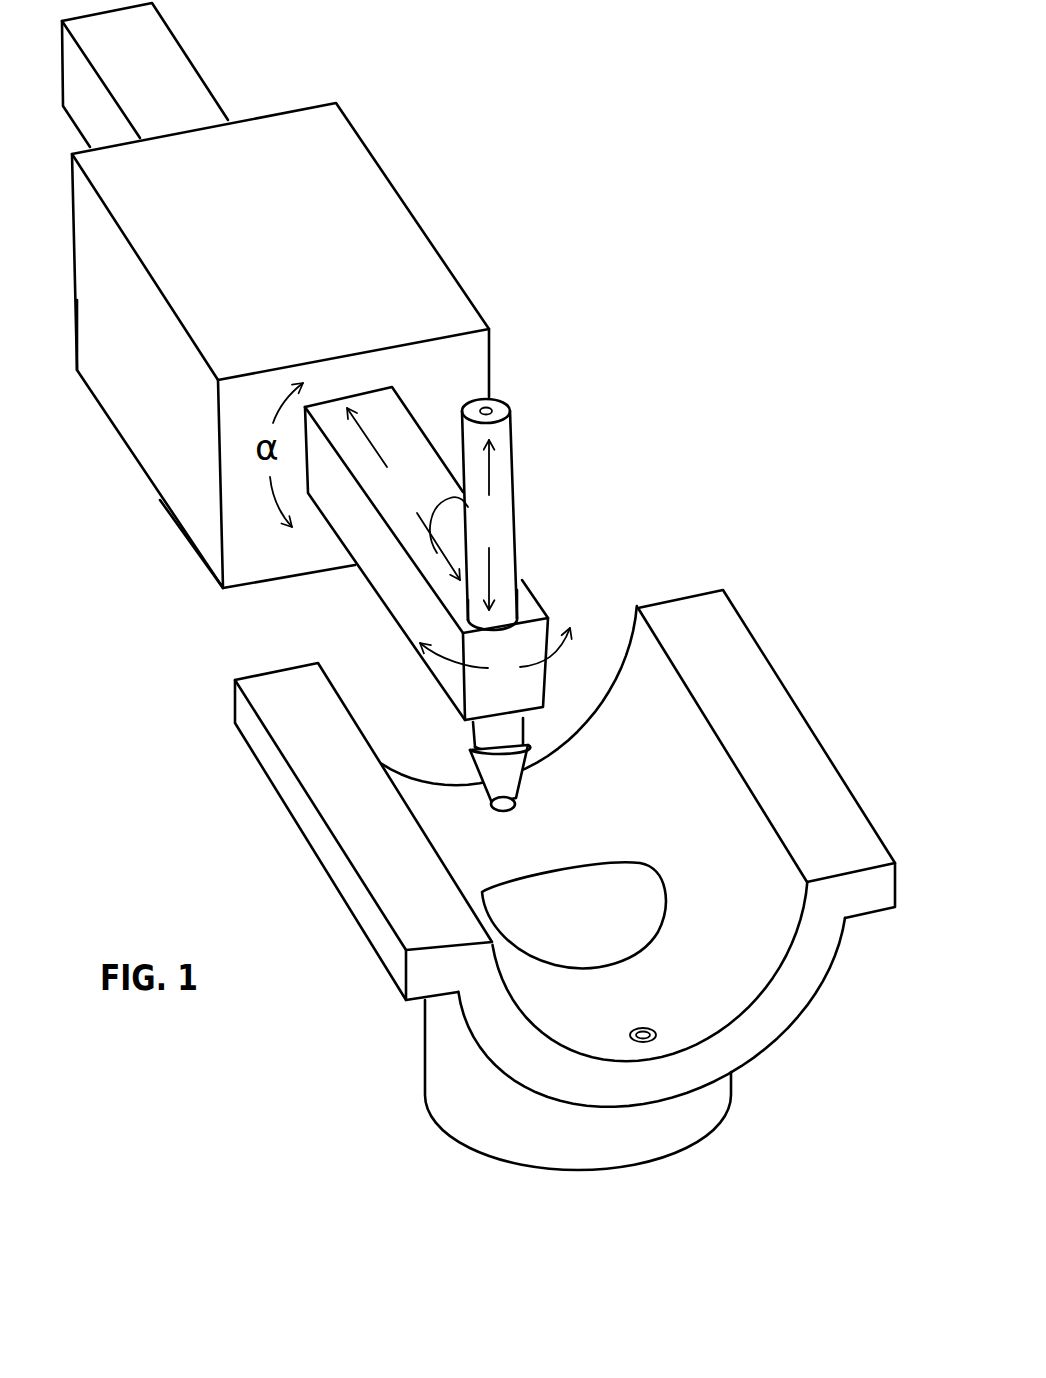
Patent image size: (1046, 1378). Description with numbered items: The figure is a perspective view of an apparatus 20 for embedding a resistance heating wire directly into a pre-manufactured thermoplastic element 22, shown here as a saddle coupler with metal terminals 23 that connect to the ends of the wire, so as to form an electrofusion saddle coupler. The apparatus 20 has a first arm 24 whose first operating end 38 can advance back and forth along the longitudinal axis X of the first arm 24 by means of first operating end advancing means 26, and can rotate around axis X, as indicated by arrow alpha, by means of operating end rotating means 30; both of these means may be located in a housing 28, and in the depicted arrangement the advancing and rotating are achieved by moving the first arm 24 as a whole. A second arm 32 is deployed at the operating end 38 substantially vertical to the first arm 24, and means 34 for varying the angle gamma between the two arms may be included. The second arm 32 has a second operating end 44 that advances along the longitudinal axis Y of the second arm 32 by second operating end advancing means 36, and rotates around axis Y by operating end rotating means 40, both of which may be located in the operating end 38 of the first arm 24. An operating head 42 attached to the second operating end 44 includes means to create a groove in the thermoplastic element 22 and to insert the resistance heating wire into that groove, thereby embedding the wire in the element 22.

The apparatus 20 is at (553, 210).
The thermoplastic element 22 is at (782, 708).
The metal terminals 23 is at (652, 1040).
The first arm 24 is at (177, 67).
The first operating end advancing means 26 is at (167, 423).
The housing 28 is at (372, 193).
The operating end rotating means 30 is at (125, 377).
The second arm 32 is at (517, 470).
The means for varying angle 34 is at (523, 580).
The second operating end advancing means 36 is at (400, 620).
The first operating end 38 is at (582, 657).
The operating end rotating means 40 is at (463, 603).
The operating head 42 is at (519, 789).
The second operating end 44 is at (517, 727).